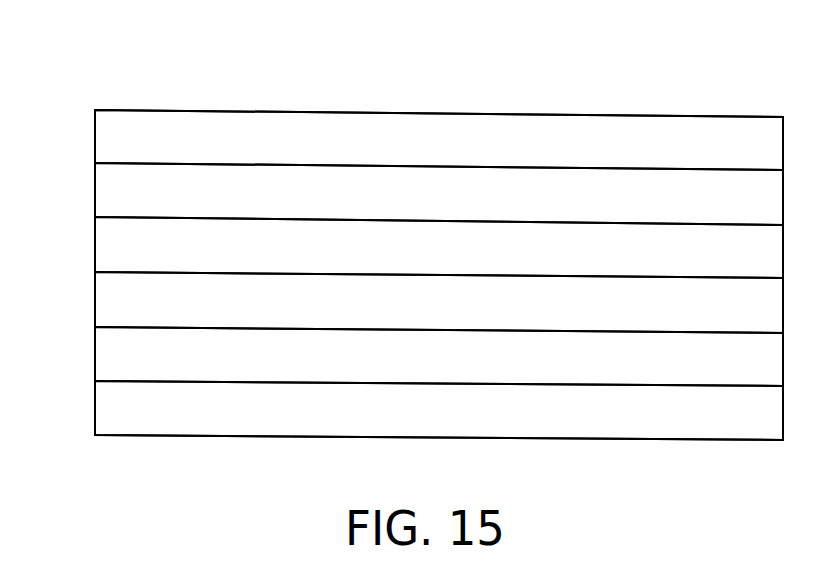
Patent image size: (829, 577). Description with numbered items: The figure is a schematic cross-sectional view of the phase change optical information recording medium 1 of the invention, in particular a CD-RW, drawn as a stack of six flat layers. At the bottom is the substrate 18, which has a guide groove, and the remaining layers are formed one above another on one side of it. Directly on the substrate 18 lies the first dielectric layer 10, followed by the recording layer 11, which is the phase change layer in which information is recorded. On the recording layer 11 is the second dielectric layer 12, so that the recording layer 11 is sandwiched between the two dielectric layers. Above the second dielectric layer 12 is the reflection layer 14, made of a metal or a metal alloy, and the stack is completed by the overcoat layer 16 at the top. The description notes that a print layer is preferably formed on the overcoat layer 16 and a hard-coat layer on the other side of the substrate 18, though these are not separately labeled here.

The recording medium 1 is at (112, 76).
The overcoat layer 16 is at (95, 136).
The reflection layer 14 is at (95, 195).
The second dielectric layer 12 is at (95, 242).
The recording layer 11 is at (95, 302).
The first dielectric layer 10 is at (95, 352).
The substrate 18 is at (95, 407).